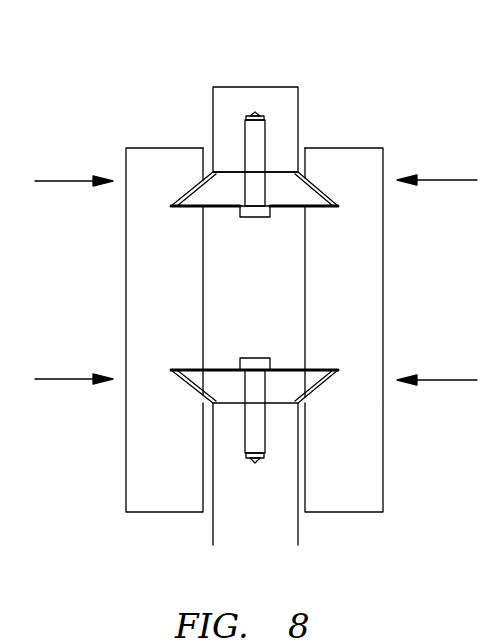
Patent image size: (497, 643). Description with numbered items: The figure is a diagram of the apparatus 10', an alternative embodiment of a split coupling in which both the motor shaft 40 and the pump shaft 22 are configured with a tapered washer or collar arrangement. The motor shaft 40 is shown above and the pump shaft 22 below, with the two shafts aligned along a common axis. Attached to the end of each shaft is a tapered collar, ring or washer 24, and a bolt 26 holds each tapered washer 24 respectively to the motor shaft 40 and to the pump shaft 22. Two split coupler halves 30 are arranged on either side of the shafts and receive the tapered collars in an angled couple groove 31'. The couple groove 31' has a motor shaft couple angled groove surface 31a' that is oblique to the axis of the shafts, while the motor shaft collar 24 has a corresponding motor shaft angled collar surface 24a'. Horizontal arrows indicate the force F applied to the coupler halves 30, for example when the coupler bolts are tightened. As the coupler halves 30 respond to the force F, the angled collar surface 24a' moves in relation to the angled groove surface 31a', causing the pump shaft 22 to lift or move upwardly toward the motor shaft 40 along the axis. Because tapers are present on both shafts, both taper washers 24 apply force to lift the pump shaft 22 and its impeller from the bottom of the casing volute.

The apparatus 10' is at (255, 291).
The motor shaft 40 is at (298, 103).
The couple groove 31' is at (315, 247).
The motor shaft couple angled groove surface 31a' is at (324, 165).
The motor shaft angled collar surface 24a' is at (369, 217).
The tapered collar, ring or washer 24 is at (221, 203).
The bolt 26 is at (255, 217).
The split coupler half 30 is at (126, 312).
The pump shaft 22 is at (297, 532).
The force F is at (255, 282).